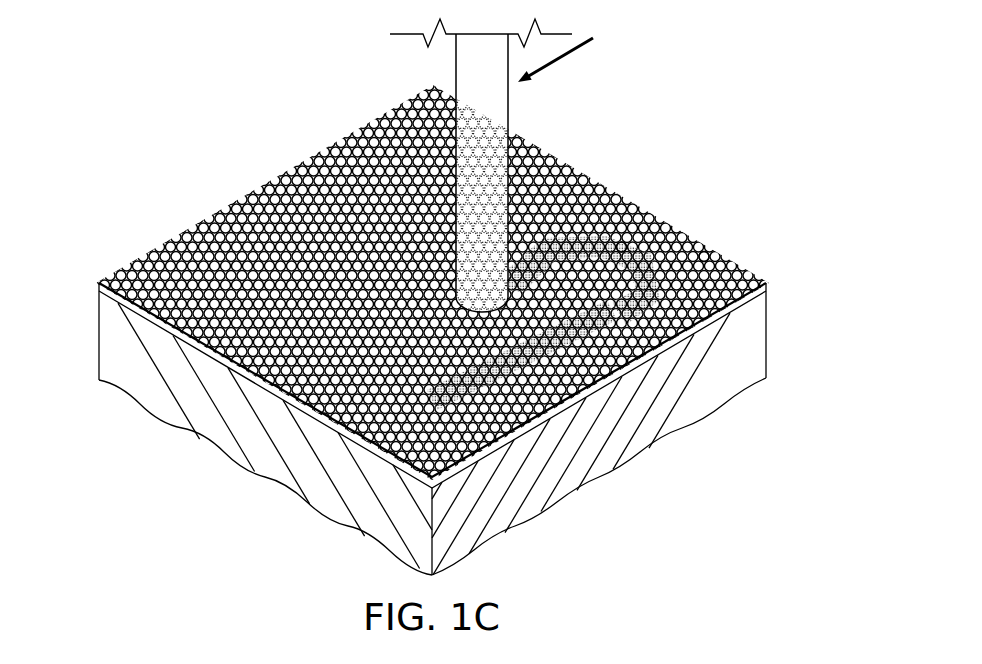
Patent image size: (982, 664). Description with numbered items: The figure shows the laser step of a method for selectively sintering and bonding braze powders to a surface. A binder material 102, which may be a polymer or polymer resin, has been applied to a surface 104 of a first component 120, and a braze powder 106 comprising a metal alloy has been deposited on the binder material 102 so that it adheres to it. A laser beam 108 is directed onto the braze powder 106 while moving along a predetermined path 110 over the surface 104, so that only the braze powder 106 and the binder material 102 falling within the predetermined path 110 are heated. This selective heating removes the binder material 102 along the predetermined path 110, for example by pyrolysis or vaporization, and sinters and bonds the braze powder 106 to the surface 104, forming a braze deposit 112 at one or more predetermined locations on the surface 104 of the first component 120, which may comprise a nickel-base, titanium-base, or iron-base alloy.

The binder material 102 is at (112, 297).
The surface 104 is at (767, 287).
The braze powder 106 is at (617, 250).
The laser beam 108 is at (508, 115).
The predetermined path 110 is at (584, 200).
The braze deposit 112 is at (631, 334).
The first component 120 is at (107, 327).